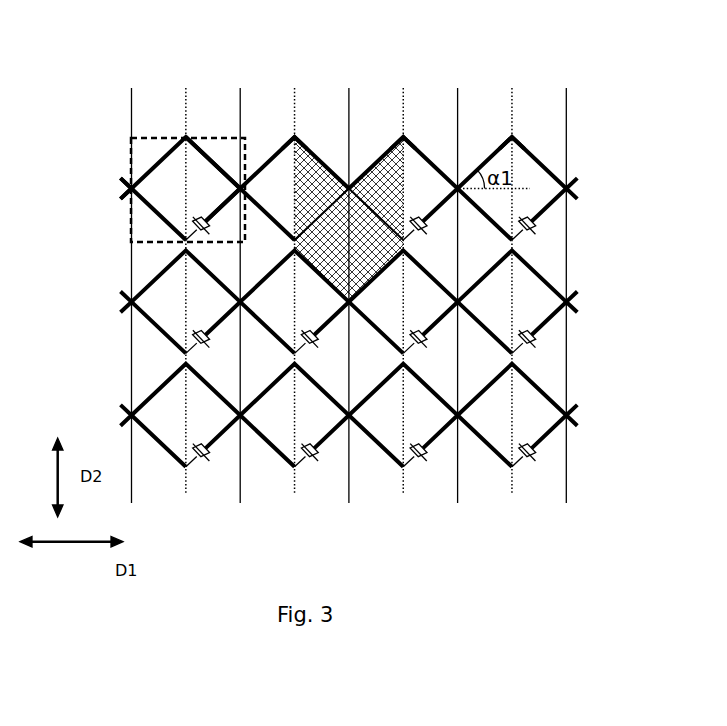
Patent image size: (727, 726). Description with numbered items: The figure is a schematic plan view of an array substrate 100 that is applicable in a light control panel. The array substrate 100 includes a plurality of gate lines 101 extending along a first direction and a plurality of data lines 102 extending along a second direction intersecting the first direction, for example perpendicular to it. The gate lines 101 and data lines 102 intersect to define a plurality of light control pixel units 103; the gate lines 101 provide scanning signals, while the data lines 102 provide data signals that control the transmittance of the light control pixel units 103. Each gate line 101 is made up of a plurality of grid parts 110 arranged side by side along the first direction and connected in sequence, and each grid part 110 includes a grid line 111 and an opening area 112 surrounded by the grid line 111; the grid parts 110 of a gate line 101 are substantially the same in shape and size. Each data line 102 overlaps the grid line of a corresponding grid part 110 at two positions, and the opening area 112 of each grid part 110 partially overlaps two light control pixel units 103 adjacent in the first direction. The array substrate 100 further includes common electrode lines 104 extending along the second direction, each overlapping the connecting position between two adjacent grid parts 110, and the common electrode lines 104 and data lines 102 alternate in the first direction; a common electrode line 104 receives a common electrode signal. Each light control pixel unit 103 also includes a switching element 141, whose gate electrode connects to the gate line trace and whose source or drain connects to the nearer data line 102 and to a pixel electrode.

The array substrate 100 is at (595, 50).
The gate line 101 is at (129, 196).
The data line 102 is at (294, 136).
The light control pixel unit 103 is at (313, 172).
The common electrode line 104 is at (567, 148).
The grid part 110 is at (145, 138).
The grid line 111 is at (197, 147).
The opening area 112 is at (213, 175).
The switching element 141 is at (130, 415).